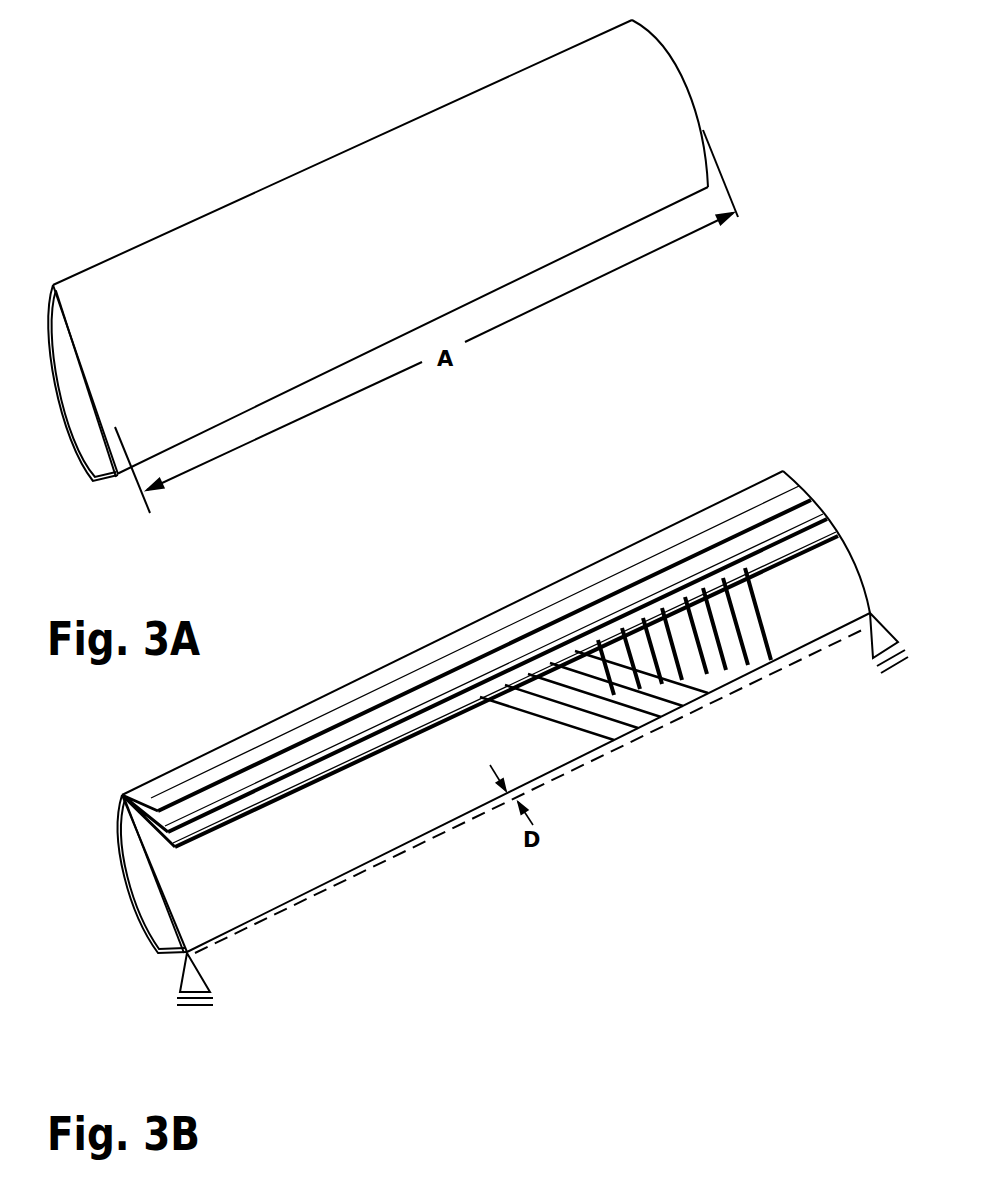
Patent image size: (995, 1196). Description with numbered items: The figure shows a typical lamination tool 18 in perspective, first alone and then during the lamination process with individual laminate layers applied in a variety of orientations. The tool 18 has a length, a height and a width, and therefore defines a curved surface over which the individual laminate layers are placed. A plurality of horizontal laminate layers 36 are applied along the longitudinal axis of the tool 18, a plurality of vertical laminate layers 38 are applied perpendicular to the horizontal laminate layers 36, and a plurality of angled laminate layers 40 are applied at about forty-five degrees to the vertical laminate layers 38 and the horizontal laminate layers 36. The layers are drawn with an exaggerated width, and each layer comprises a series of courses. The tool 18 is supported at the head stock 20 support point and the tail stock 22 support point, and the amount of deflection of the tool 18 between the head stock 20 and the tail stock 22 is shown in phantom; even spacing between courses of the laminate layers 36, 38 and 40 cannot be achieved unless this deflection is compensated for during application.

In FIG. 3A, the tool 18 is at (655, 88).
In FIG. 3B, the tool 18 is at (243, 870).
In FIG. 3B, the head stock 20 is at (192, 972).
In FIG. 3B, the tail stock 22 is at (870, 657).
In FIG. 3B, the horizontal laminate layers 36 is at (792, 458).
In FIG. 3B, the vertical laminate layers 38 is at (735, 573).
In FIG. 3B, the angled laminate layers 40 is at (605, 753).